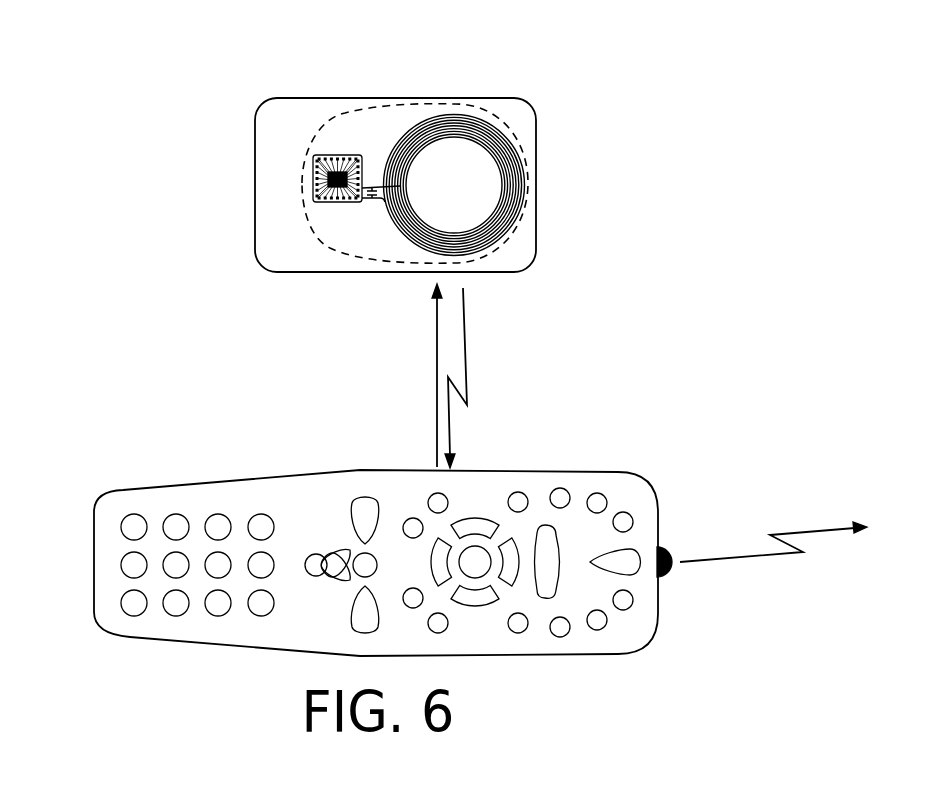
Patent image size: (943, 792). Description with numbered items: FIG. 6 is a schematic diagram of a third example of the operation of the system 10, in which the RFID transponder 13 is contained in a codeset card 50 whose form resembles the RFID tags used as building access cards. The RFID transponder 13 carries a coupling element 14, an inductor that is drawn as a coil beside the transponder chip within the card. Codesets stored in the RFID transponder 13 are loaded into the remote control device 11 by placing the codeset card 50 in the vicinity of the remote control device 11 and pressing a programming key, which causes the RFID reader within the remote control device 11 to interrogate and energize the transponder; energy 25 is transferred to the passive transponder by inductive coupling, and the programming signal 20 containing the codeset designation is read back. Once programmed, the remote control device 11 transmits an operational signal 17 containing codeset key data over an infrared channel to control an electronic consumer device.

The system 10 is at (152, 172).
The remote control device 11 is at (123, 490).
The RFID transponder 13 is at (317, 145).
The coupling element 14 is at (462, 230).
The operational signal 17 is at (758, 557).
The programming signal 20 is at (468, 378).
The energy 25 is at (437, 338).
The codeset card 50 is at (537, 181).